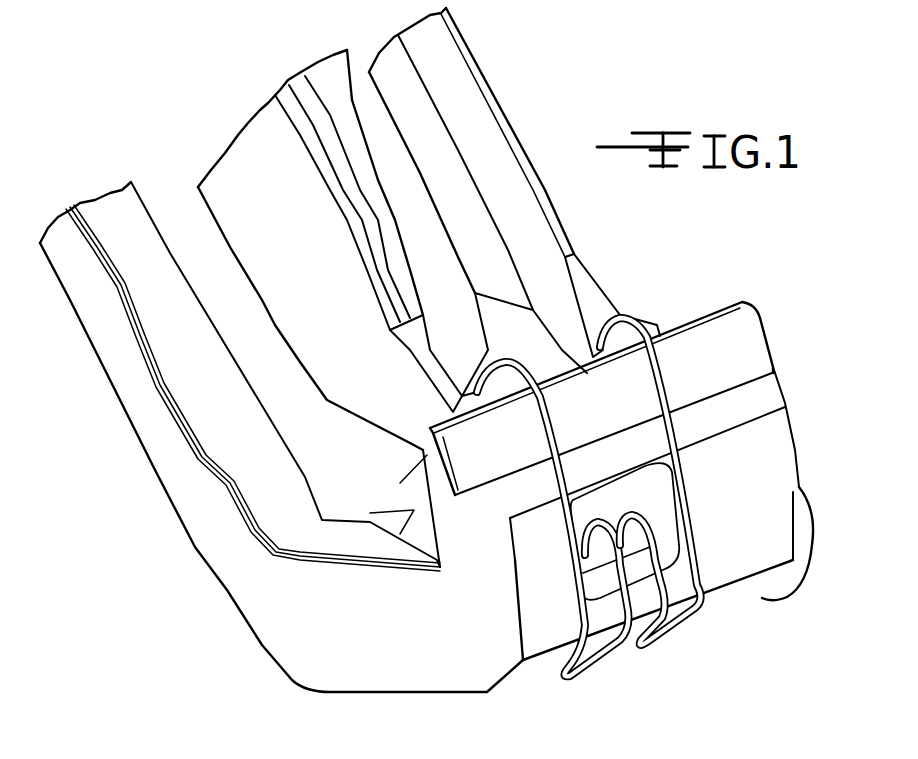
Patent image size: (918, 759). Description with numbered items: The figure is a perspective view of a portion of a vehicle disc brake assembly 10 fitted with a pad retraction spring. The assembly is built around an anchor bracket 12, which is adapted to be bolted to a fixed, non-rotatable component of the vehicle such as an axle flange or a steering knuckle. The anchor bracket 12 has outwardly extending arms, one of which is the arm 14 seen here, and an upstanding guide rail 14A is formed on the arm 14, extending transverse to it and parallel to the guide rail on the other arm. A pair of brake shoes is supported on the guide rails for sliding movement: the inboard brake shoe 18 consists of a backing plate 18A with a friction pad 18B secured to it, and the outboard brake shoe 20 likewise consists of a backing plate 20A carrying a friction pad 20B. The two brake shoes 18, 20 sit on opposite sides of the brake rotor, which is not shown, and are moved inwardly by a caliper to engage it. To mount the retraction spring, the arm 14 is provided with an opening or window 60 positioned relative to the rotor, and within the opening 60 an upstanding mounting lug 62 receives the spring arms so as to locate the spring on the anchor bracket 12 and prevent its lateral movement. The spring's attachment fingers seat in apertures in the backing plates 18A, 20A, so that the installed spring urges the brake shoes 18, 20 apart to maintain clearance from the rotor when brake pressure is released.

The vehicle disc brake assembly 10 is at (152, 545).
The anchor bracket 12 is at (133, 438).
The arm 14 is at (773, 433).
The guide rail 14A is at (768, 388).
The inboard brake shoe 18 is at (556, 215).
The backing plate 18A is at (465, 38).
The friction pad 18B is at (470, 128).
The outboard brake shoe 20 is at (260, 100).
The backing plate 20A is at (247, 192).
The friction pad 20B is at (338, 77).
The opening 60 is at (650, 509).
The mounting lug 62 is at (698, 580).